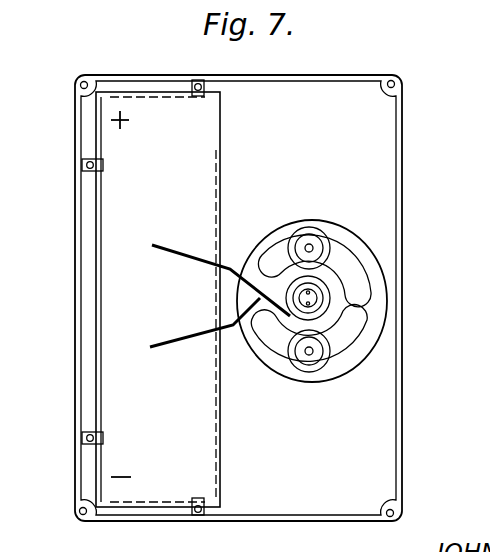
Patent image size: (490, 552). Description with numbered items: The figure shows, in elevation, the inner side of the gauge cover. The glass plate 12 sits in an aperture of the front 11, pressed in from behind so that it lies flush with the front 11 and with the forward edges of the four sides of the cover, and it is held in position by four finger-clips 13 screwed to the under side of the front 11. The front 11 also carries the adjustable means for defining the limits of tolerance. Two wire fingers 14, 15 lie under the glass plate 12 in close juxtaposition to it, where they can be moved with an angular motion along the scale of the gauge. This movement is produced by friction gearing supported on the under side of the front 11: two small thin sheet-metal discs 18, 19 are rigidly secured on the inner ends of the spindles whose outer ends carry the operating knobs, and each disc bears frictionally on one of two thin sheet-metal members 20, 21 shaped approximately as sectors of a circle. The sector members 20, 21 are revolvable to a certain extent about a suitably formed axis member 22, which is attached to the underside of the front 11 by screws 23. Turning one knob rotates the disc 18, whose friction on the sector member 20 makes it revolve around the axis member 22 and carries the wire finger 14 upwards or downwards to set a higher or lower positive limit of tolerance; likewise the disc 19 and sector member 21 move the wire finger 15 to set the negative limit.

The front 11 is at (363, 142).
The glass plate 12 is at (112, 144).
The finger-clips 13 is at (204, 84).
The wire finger 14 is at (155, 251).
The wire finger 15 is at (170, 340).
The disc 18 is at (311, 236).
The disc 19 is at (318, 347).
The sector member 20 is at (357, 246).
The sector member 21 is at (356, 357).
The axis member 22 is at (313, 291).
The screws 23 is at (318, 302).